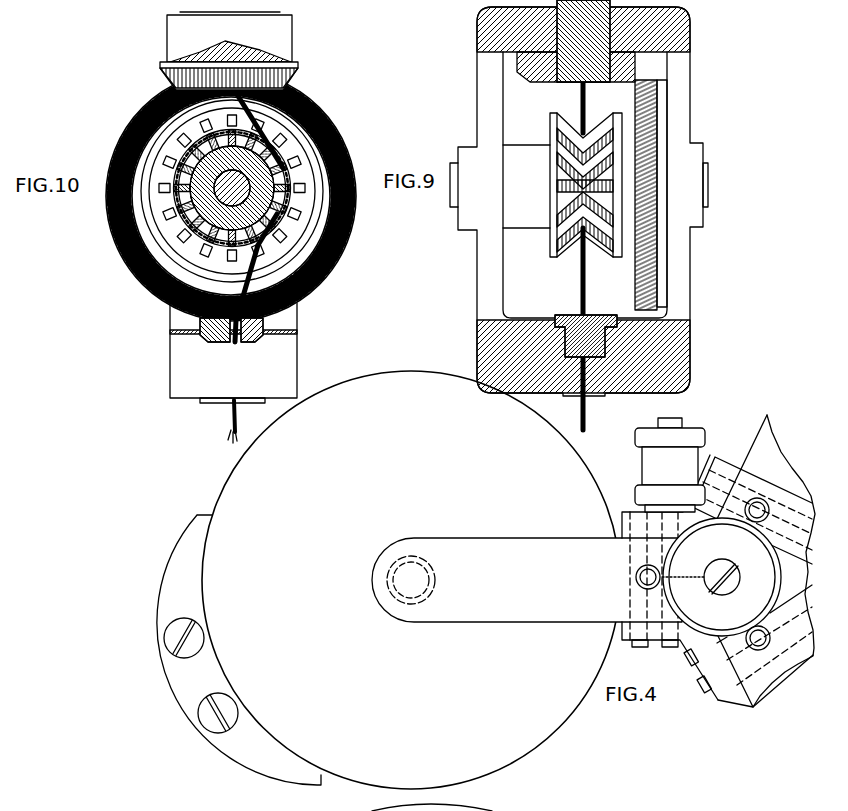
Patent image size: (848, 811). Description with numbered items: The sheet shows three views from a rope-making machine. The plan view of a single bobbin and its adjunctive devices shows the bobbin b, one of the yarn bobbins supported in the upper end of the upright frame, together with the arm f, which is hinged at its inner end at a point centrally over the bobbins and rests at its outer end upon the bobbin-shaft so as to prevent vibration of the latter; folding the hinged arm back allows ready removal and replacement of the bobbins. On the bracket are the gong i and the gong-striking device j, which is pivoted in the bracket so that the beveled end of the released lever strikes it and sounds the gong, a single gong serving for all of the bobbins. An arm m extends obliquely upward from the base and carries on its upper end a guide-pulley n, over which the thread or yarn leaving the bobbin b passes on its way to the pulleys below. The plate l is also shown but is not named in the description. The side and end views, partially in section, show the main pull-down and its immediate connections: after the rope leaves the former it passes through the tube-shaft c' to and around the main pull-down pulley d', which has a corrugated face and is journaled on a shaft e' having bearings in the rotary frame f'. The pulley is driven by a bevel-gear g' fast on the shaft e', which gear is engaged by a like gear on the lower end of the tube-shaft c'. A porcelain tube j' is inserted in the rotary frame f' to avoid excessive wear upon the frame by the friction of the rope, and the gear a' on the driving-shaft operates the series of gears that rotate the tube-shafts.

In FIG. 10, the gear on the driving-shaft a' is at (275, 188).
In FIG. 10, the shaft e' is at (266, 261).
In FIG. 9, the shaft e' is at (722, 185).
In FIG. 10, the bevel-gear g' is at (238, 196).
In FIG. 9, the bevel-gear g' is at (660, 195).
In FIG. 10, the rotary frame f' is at (229, 207).
In FIG. 9, the rotary frame f' is at (617, 193).
In FIG. 10, the porcelain tube j' is at (263, 326).
In FIG. 9, the porcelain tube j' is at (580, 320).
In FIG. 9, the tube-shaft c' is at (576, 53).
In FIG. 9, the main pull-down pulley d' is at (576, 215).
In FIG. 4, the bobbin b is at (411, 580).
In FIG. 4, the crescent guard plate l is at (239, 650).
In FIG. 4, the arm f is at (527, 580).
In FIG. 4, the gong-striking device j is at (669, 578).
In FIG. 4, the gong i is at (721, 577).
In FIG. 4, the arm m is at (637, 438).
In FIG. 4, the guide-pulley n is at (670, 465).